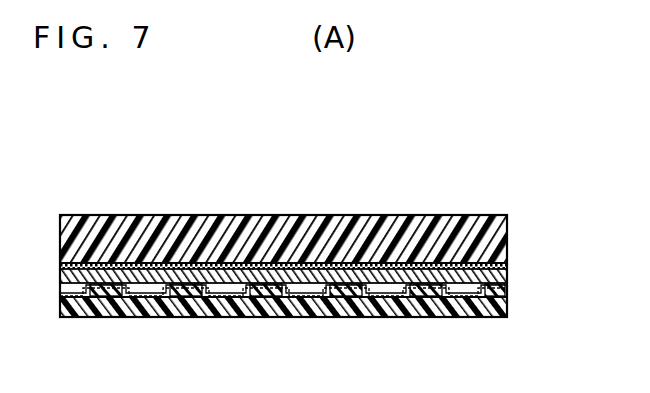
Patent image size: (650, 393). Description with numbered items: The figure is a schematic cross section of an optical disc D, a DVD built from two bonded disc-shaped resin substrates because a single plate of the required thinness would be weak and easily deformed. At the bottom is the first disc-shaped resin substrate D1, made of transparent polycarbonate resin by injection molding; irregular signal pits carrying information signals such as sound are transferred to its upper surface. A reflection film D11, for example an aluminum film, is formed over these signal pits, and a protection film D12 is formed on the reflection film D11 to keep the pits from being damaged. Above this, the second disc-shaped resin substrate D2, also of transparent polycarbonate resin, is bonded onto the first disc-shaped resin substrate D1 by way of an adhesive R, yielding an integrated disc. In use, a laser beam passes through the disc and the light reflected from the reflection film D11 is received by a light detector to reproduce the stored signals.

The optical disc D is at (326, 267).
The second disc-shaped resin substrate D2 is at (373, 232).
The adhesive R is at (443, 268).
The protection film D12 is at (506, 272).
The first disc-shaped resin substrate D1 is at (238, 300).
The reflection film D11 is at (497, 297).